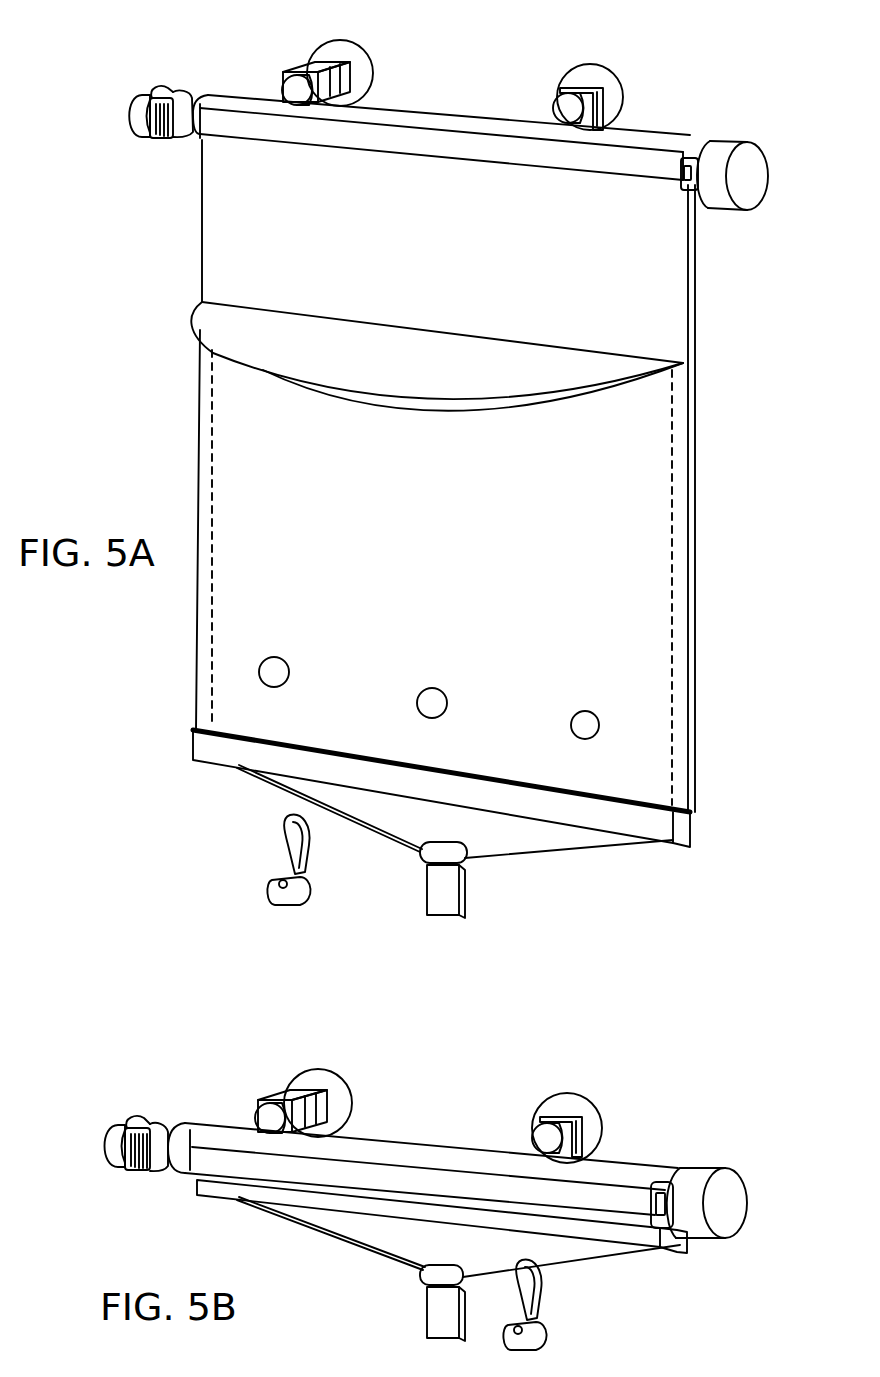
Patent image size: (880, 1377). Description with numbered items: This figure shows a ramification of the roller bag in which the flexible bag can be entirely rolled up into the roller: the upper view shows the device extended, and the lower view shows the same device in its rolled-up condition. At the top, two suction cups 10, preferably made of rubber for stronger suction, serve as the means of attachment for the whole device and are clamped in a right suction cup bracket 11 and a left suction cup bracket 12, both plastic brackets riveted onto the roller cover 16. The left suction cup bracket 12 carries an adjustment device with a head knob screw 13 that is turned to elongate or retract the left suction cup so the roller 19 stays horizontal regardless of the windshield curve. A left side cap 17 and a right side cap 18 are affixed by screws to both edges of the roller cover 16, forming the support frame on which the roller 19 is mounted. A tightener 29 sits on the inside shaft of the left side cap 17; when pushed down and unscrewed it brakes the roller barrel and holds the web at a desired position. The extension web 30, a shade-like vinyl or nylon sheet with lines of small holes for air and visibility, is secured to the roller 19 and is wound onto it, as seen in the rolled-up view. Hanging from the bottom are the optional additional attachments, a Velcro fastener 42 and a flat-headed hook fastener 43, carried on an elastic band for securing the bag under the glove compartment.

In FIG. 5A, the suction cup 10 is at (363, 73).
In FIG. 5B, the suction cup 10 is at (338, 1082).
In FIG. 5A, the right suction cup bracket 11 is at (600, 97).
In FIG. 5B, the right suction cup bracket 11 is at (580, 1127).
In FIG. 5A, the left suction cup bracket 12 is at (313, 60).
In FIG. 5B, the left suction cup bracket 12 is at (287, 1093).
In FIG. 5A, the adjustment head knob with screw 13 is at (292, 87).
In FIG. 5B, the adjustment head knob with screw 13 is at (267, 1115).
In FIG. 5A, the roller cover 16 is at (670, 142).
In FIG. 5B, the roller cover 16 is at (650, 1167).
In FIG. 5A, the left side cap 17 is at (143, 105).
In FIG. 5B, the left side cap 17 is at (120, 1135).
In FIG. 5A, the right side cap 18 is at (757, 167).
In FIG. 5B, the right side cap 18 is at (733, 1193).
In FIG. 5A, the roller 19 is at (243, 127).
In FIG. 5B, the roller 19 is at (220, 1153).
In FIG. 5A, the tightener 29 is at (172, 98).
In FIG. 5B, the tightener 29 is at (153, 1123).
In FIG. 5A, the extension web 30 is at (230, 250).
In FIG. 5A, the Velcro fastener 42 is at (437, 888).
In FIG. 5B, the Velcro fastener 42 is at (443, 1308).
In FIG. 5A, the hook fastener 43 is at (280, 893).
In FIG. 5B, the hook fastener 43 is at (547, 1333).